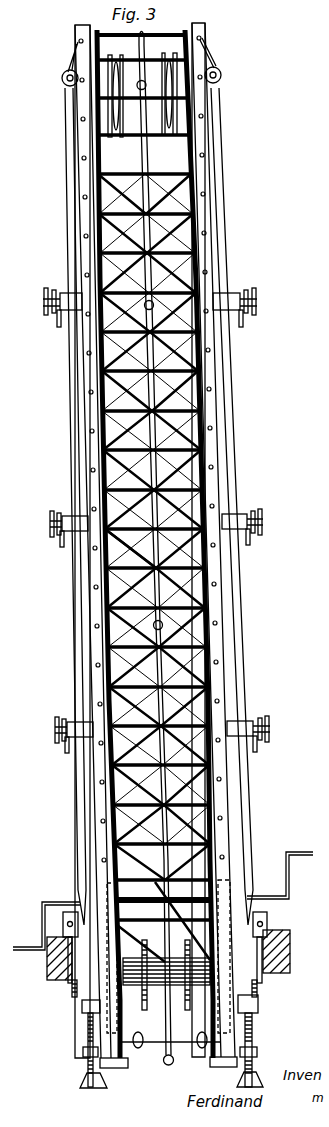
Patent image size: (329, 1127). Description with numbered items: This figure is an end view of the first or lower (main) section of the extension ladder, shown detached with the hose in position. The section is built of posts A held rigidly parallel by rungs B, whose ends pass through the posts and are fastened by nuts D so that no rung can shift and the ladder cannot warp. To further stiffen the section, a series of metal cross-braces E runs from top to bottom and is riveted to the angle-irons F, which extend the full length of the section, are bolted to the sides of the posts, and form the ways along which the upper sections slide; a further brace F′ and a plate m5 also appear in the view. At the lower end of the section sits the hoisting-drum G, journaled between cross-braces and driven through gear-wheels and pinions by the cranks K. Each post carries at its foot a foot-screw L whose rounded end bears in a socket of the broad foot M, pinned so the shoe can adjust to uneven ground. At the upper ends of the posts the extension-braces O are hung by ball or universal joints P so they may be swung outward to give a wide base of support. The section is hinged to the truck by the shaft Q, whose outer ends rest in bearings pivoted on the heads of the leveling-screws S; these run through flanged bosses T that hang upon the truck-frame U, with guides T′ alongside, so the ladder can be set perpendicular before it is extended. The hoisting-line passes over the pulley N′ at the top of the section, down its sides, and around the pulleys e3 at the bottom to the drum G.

The posts A is at (155, 544).
The rungs B is at (154, 490).
The nuts D is at (156, 545).
The cross-braces E is at (154, 568).
The angle-irons F is at (159, 549).
The brace F′ is at (130, 548).
The hoisting-drum G is at (166, 975).
The cranks K is at (163, 901).
The foot-screw L is at (166, 1041).
The foot M is at (171, 1088).
The pulley N′ is at (142, 95).
The extension-braces O is at (154, 506).
The ball or universal joint P is at (137, 63).
The shaft Q is at (163, 904).
The leveling-screws S is at (168, 989).
The bosses T is at (165, 947).
The guides T′ is at (168, 956).
The truck-frame U is at (168, 955).
The top cross bar m5 is at (141, 43).
The pulleys e3 is at (171, 1048).